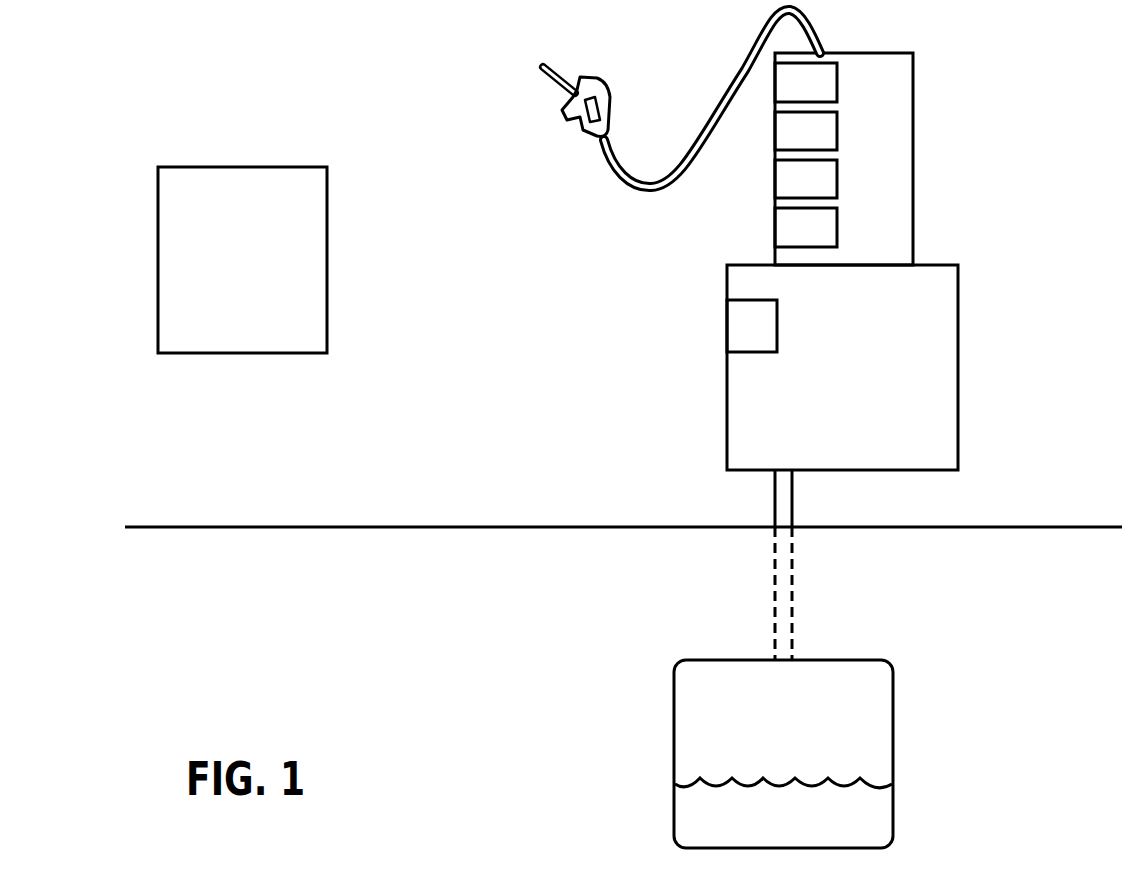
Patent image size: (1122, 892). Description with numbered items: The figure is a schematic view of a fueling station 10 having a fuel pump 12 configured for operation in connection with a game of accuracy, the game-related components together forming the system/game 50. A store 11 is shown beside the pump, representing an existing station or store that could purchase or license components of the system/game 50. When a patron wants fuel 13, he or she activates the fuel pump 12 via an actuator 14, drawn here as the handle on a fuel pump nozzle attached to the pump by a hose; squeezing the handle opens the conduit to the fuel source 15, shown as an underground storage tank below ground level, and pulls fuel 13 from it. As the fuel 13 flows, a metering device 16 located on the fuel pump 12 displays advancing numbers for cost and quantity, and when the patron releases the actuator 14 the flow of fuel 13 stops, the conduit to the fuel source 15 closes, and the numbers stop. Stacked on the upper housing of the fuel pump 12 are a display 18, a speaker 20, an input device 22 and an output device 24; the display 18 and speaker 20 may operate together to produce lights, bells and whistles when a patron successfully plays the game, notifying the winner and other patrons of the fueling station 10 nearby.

The fueling station 10 is at (385, 437).
The store 11 is at (242, 260).
The fuel pump 12 is at (842, 462).
The fuel 13 is at (783, 806).
The actuator 14 is at (590, 133).
The fuel source 15 is at (894, 738).
The metering device 16 is at (752, 326).
The display 18 is at (806, 82).
The speaker 20 is at (806, 131).
The input device 22 is at (806, 179).
The output device 24 is at (806, 227).
The system/game 50 is at (973, 95).